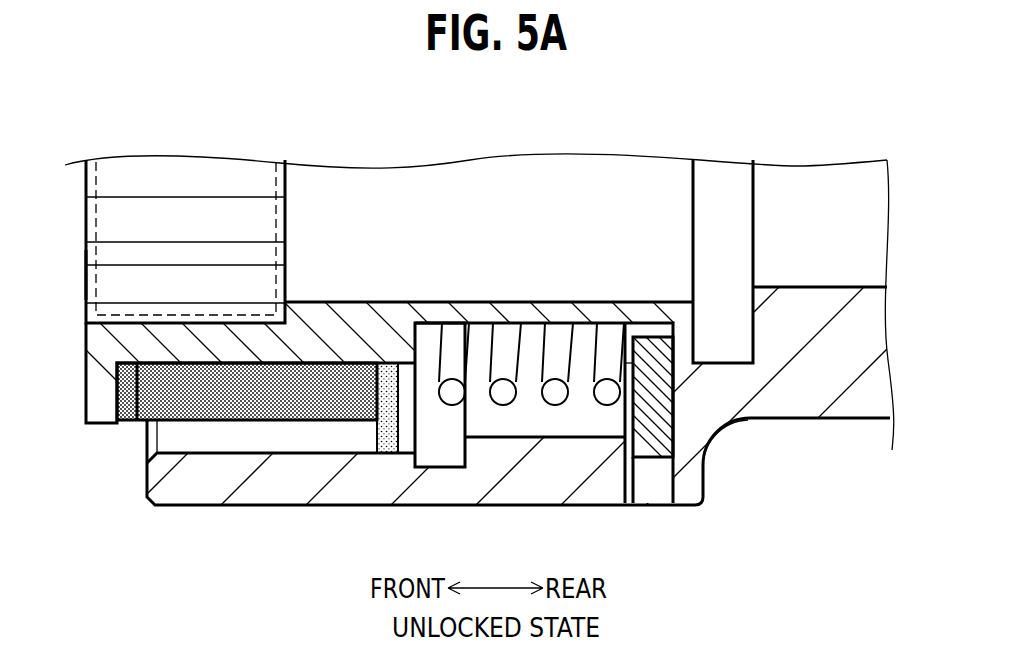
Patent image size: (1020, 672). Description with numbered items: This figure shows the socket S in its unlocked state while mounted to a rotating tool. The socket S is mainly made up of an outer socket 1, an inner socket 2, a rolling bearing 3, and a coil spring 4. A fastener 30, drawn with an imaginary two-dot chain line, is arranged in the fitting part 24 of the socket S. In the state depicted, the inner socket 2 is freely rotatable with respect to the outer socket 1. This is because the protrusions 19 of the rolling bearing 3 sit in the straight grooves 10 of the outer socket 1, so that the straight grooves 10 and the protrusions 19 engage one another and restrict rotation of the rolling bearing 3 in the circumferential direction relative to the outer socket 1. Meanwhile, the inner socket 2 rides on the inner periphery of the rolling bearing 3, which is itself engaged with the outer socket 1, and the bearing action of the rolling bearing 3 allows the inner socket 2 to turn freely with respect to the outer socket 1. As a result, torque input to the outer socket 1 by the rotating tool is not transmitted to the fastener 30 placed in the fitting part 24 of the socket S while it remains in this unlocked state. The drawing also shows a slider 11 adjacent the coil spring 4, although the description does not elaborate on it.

The outer socket 1 is at (600, 506).
The inner socket 2 is at (98, 378).
The rolling bearing 3 is at (180, 397).
The coil spring 4 is at (560, 347).
The straight grooves 10 is at (200, 433).
The slider 11 is at (440, 437).
The protrusions 19 is at (385, 437).
The fitting part 24 is at (78, 270).
The fastener 30 is at (87, 231).
The socket S is at (762, 473).